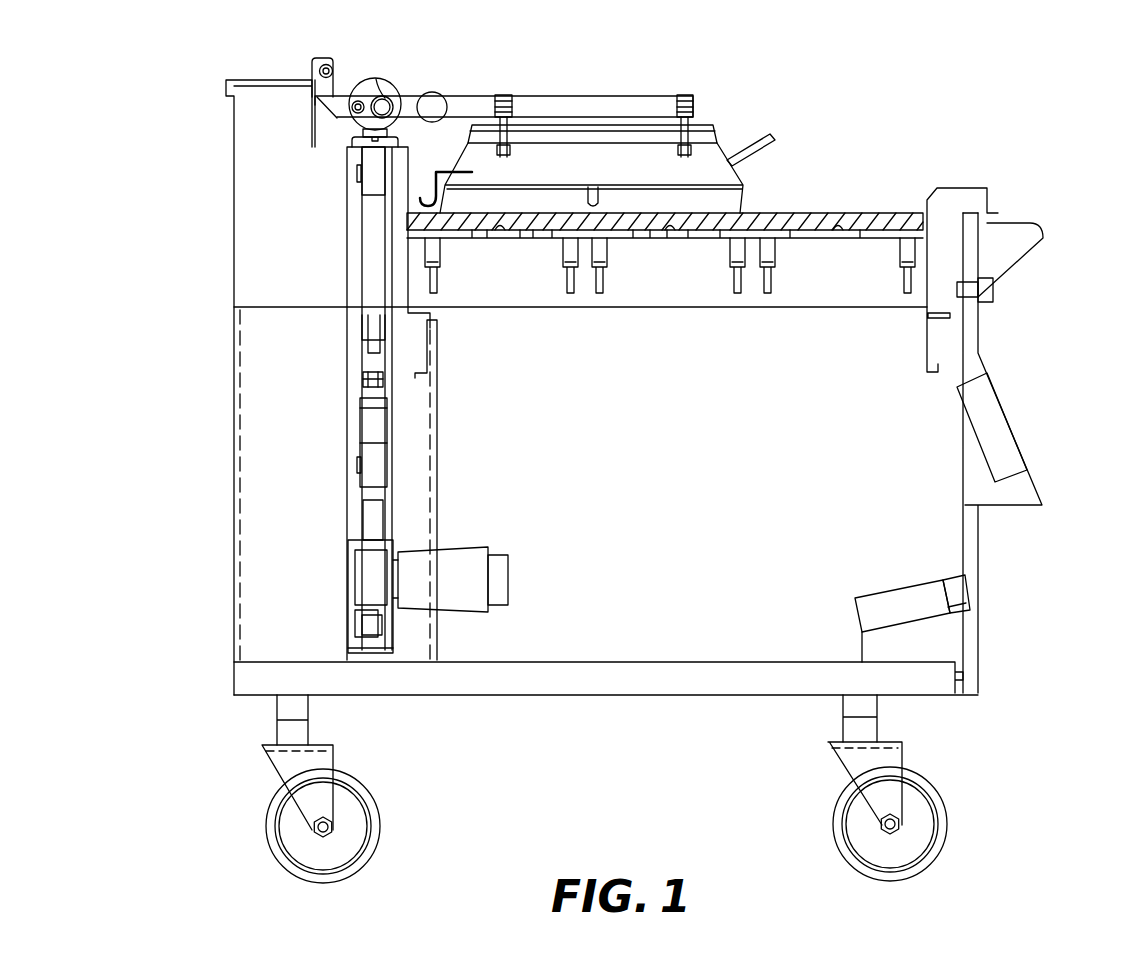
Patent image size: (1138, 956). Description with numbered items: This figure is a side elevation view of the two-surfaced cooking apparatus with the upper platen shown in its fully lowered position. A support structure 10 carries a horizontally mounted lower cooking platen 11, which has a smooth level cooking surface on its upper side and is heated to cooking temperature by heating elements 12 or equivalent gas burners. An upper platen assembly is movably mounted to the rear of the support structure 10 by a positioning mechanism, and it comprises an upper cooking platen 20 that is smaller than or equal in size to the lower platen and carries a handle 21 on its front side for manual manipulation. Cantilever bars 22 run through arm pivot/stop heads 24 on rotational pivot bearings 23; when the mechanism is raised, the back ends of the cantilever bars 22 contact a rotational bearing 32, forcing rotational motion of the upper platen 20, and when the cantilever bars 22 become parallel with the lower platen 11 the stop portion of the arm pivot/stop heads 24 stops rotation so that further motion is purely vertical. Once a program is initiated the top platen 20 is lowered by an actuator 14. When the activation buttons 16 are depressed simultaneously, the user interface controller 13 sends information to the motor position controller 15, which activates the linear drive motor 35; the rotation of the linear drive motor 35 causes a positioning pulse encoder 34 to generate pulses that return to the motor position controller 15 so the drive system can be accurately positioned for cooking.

The support structure 10 is at (396, 270).
The lower cooking platen 11 is at (872, 213).
The heating elements 12 is at (582, 257).
The user interface controller 13 is at (1007, 413).
The actuator 14 is at (340, 403).
The motor position controller 15 is at (918, 588).
The activation buttons 16 is at (993, 293).
The upper cooking platen 20 is at (750, 189).
The handle 21 is at (765, 133).
The cantilever bars 22 is at (560, 95).
The rotational pivot bearings 23 is at (418, 96).
The arm pivot/stop heads 24 is at (385, 80).
The rotational bearing 32 is at (334, 80).
The positioning pulse encoder 34 is at (508, 582).
The linear drive motor 35 is at (450, 548).